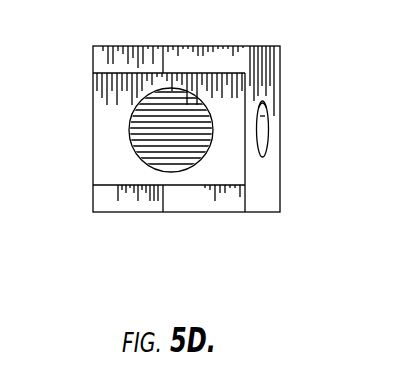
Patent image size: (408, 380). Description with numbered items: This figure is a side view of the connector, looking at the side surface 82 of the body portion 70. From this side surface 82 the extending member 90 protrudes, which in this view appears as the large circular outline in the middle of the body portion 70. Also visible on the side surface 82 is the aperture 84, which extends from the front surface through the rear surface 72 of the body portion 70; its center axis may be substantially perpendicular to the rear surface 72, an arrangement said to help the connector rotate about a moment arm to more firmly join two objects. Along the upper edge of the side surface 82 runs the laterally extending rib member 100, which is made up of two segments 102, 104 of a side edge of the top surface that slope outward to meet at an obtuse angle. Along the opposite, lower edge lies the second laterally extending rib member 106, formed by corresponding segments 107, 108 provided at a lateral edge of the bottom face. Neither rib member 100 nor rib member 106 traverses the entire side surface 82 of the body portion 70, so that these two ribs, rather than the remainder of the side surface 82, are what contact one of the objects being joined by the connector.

The body portion 70 is at (199, 163).
The rear surface 72 is at (273, 177).
The side surface 82 is at (220, 69).
The aperture 84 is at (273, 107).
The extending member 90 is at (139, 136).
The rib member 100 is at (166, 127).
The segment 102 is at (257, 112).
The segment 104 is at (128, 44).
The second rib member 106 is at (149, 150).
The segment 107 is at (237, 215).
The segment 108 is at (129, 215).